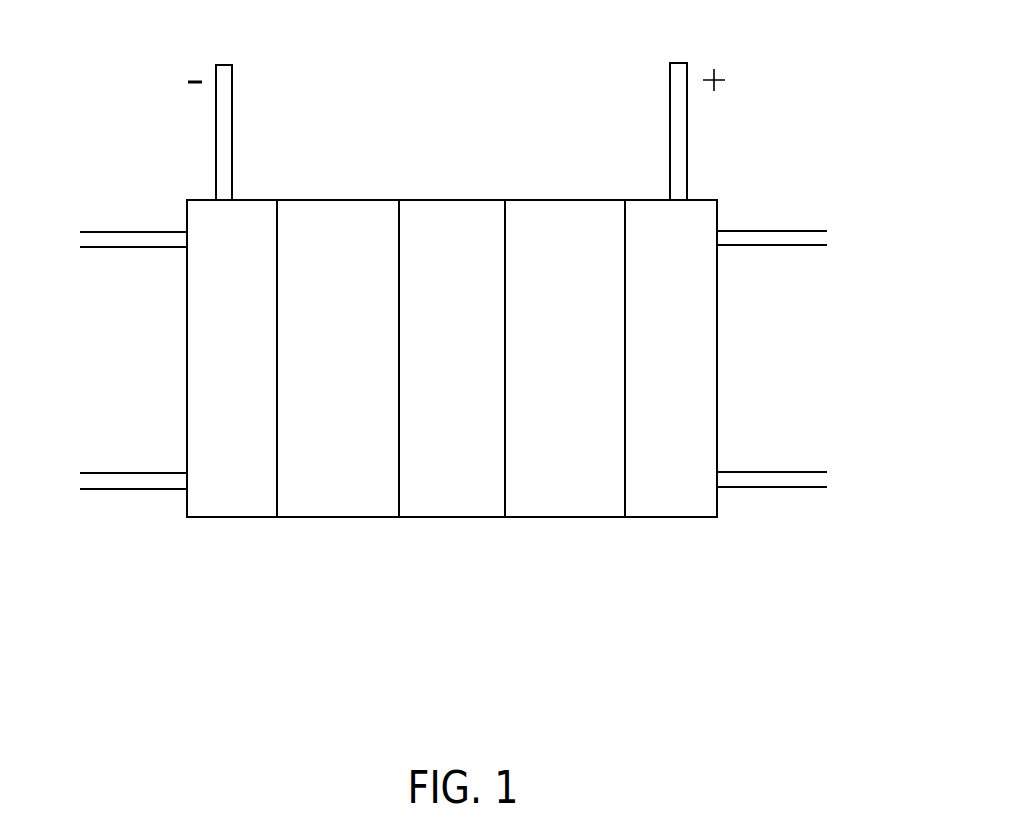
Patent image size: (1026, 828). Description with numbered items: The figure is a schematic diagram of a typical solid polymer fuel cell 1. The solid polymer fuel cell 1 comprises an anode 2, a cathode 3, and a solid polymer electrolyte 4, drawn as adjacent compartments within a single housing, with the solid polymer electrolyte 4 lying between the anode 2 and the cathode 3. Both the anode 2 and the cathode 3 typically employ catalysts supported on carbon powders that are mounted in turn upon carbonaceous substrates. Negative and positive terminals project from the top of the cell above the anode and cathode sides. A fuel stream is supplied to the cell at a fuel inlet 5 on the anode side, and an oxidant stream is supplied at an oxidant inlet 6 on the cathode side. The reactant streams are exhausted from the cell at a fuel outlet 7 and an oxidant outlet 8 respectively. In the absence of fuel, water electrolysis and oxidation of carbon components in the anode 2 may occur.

The solid polymer fuel cell 1 is at (802, 115).
The anode 2 is at (330, 232).
The cathode 3 is at (557, 230).
The solid polymer electrolyte 4 is at (452, 230).
The fuel inlet 5 is at (132, 240).
The oxidant inlet 6 is at (780, 242).
The fuel outlet 7 is at (137, 482).
The oxidant outlet 8 is at (779, 482).